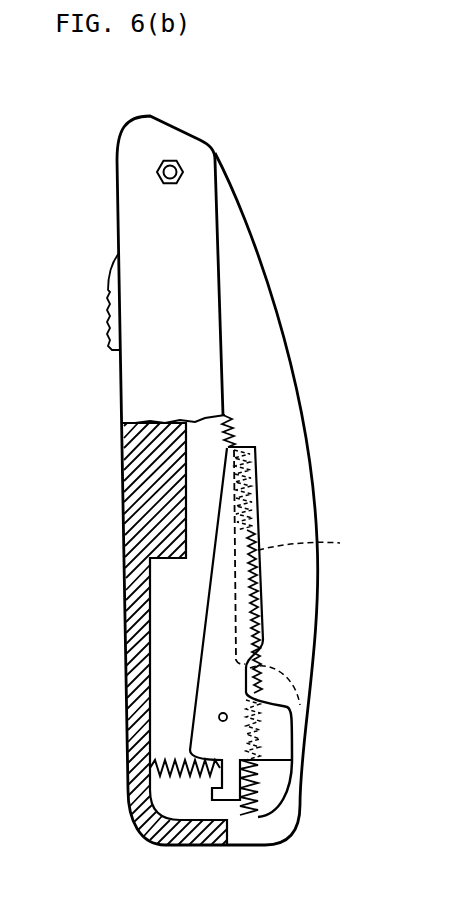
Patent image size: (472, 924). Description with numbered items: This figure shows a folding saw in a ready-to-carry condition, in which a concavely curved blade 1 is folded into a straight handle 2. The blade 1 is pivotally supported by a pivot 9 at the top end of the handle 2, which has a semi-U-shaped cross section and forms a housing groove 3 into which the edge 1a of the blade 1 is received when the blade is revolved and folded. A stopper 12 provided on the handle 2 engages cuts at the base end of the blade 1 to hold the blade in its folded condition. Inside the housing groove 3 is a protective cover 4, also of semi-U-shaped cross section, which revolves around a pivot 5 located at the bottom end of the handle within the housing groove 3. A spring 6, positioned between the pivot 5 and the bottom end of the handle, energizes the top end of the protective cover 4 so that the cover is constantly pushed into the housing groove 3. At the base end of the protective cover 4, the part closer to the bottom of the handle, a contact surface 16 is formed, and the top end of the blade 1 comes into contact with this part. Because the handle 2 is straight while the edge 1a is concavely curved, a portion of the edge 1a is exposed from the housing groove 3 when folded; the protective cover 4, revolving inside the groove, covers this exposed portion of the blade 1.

The blade 1 is at (243, 287).
The edge 1a is at (312, 618).
The handle 2 is at (160, 237).
The housing groove 3 is at (205, 475).
The protective cover 4 is at (224, 613).
The pivot 5 is at (219, 716).
The spring 6 is at (150, 773).
The pivot 9 is at (157, 168).
The stopper 12 is at (108, 318).
The contact surface 16 is at (245, 790).